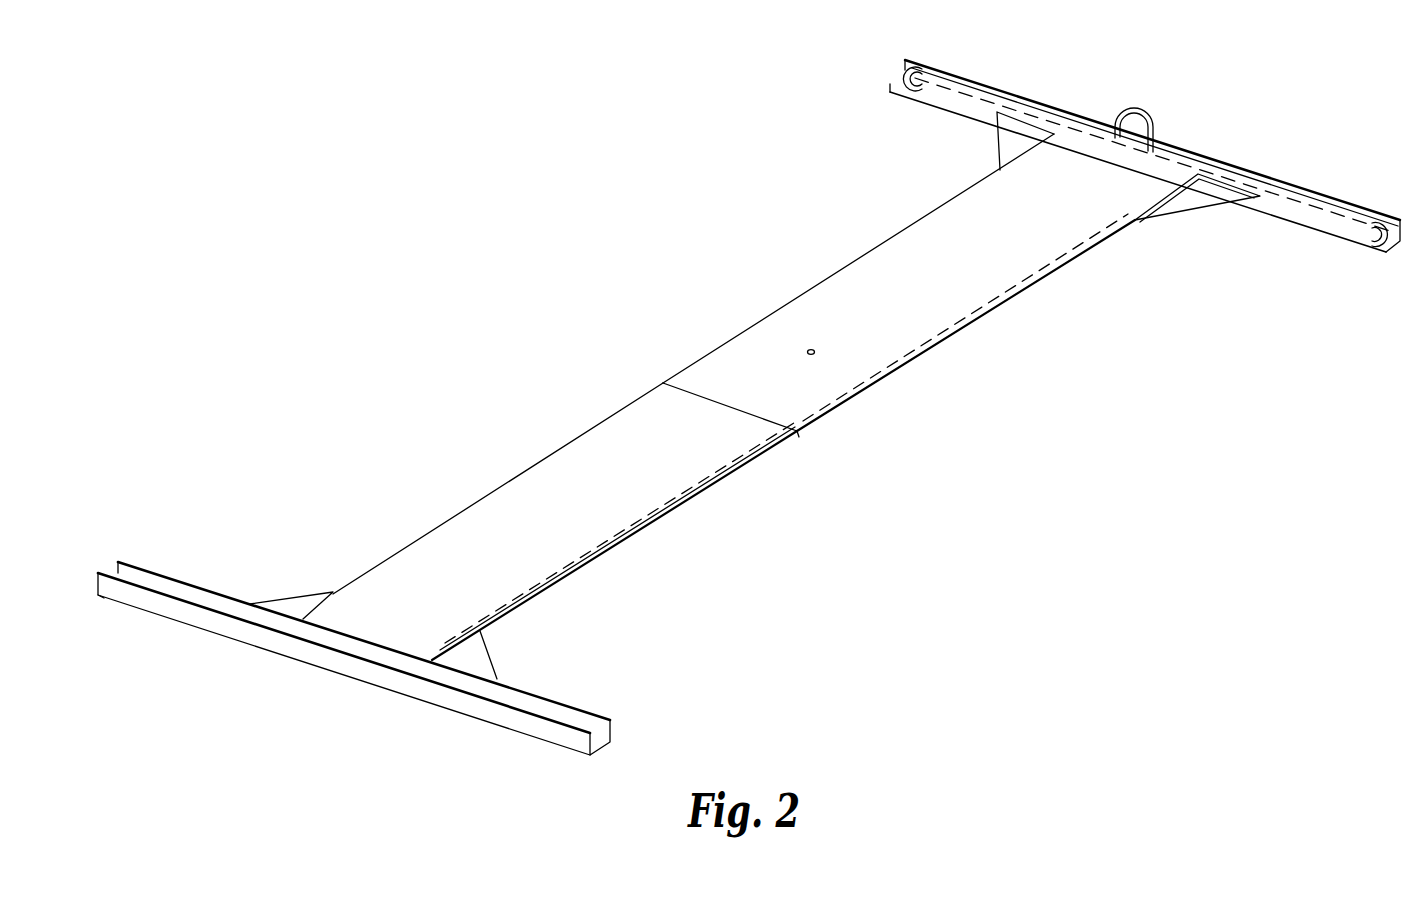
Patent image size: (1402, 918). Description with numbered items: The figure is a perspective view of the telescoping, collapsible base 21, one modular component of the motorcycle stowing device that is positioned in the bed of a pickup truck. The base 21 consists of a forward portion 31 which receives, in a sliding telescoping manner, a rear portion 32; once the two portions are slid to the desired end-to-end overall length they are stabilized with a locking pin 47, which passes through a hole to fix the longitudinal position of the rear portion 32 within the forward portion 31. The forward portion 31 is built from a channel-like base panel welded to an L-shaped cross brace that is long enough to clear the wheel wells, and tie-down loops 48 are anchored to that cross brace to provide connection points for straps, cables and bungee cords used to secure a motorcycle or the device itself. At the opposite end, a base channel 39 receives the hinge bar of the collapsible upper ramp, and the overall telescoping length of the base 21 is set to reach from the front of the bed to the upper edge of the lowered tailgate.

The telescoping, collapsible base 21 is at (590, 361).
The forward portion 31 is at (921, 308).
The rear portion 32 is at (548, 543).
The base channel 39 is at (402, 694).
The locking pin 47 is at (810, 348).
The tie-down loops 48 is at (898, 75).